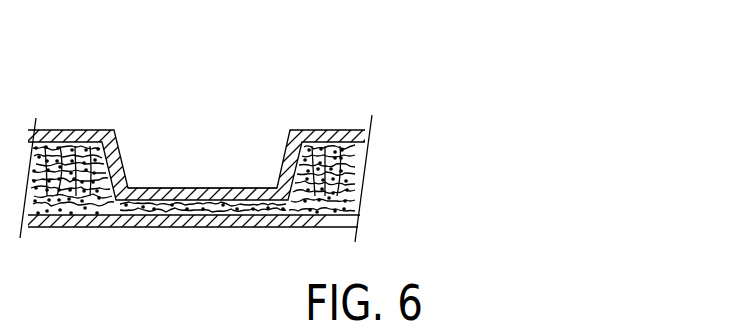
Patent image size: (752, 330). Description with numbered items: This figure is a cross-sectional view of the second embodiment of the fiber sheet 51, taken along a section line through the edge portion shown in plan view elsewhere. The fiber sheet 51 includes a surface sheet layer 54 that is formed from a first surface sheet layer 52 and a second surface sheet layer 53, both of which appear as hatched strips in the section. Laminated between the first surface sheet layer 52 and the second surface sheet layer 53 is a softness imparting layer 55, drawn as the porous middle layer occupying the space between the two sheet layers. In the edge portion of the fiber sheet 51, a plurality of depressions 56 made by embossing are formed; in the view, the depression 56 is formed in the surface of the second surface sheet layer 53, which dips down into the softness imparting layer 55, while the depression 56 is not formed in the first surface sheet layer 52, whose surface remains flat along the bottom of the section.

The fiber sheet 51 is at (65, 128).
The first surface sheet layer 52 is at (360, 222).
The second surface sheet layer 53 is at (362, 131).
The surface sheet layer 54 is at (457, 118).
The softness imparting layer 55 is at (325, 130).
The depression 56 is at (193, 157).